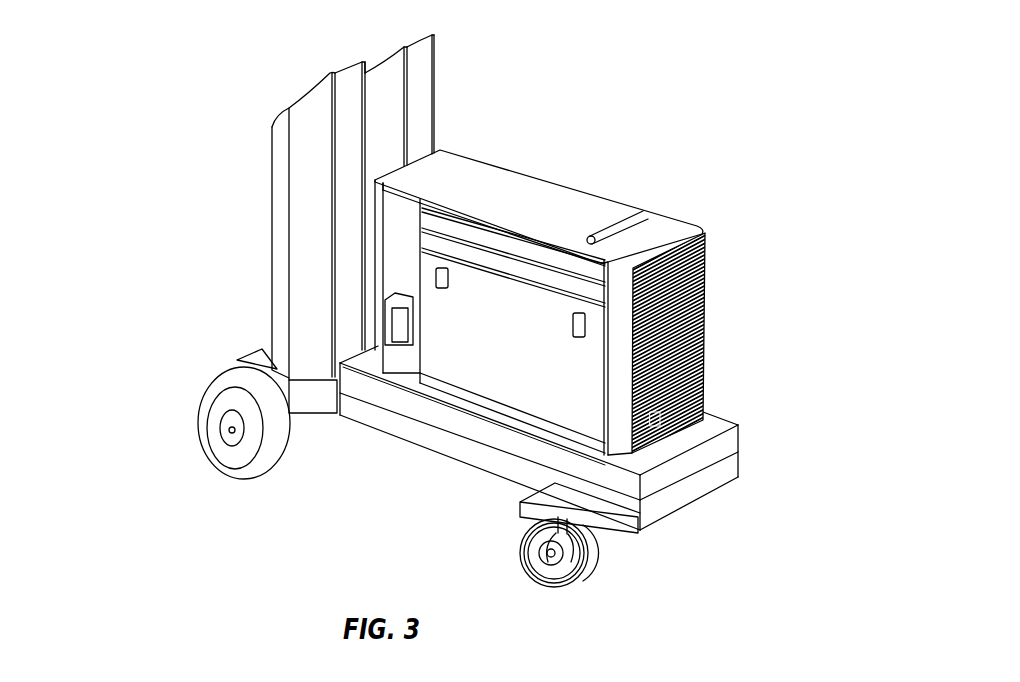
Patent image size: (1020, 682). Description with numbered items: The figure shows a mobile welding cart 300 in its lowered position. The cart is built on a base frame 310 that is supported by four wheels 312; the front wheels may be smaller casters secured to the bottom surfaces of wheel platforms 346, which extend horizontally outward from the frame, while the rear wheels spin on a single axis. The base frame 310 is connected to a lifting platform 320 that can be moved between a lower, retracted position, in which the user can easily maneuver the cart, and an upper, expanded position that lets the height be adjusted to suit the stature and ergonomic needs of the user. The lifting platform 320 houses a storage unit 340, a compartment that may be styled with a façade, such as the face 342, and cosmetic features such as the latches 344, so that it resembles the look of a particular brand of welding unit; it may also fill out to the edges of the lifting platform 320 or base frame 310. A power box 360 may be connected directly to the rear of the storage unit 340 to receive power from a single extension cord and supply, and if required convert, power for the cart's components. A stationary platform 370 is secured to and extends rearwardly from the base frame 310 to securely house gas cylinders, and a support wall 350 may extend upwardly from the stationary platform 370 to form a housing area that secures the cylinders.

The mobile welding cart 300 is at (243, 173).
The base frame 310 is at (381, 423).
The wheels 312 is at (207, 415).
The lifting platform 320 is at (715, 425).
The storage unit 340 is at (672, 220).
The face 342 is at (655, 423).
The latches 344 is at (707, 267).
The wheel platforms 346 is at (597, 515).
The support wall 350 is at (427, 67).
The power box 360 is at (450, 162).
The stationary platform 370 is at (263, 352).